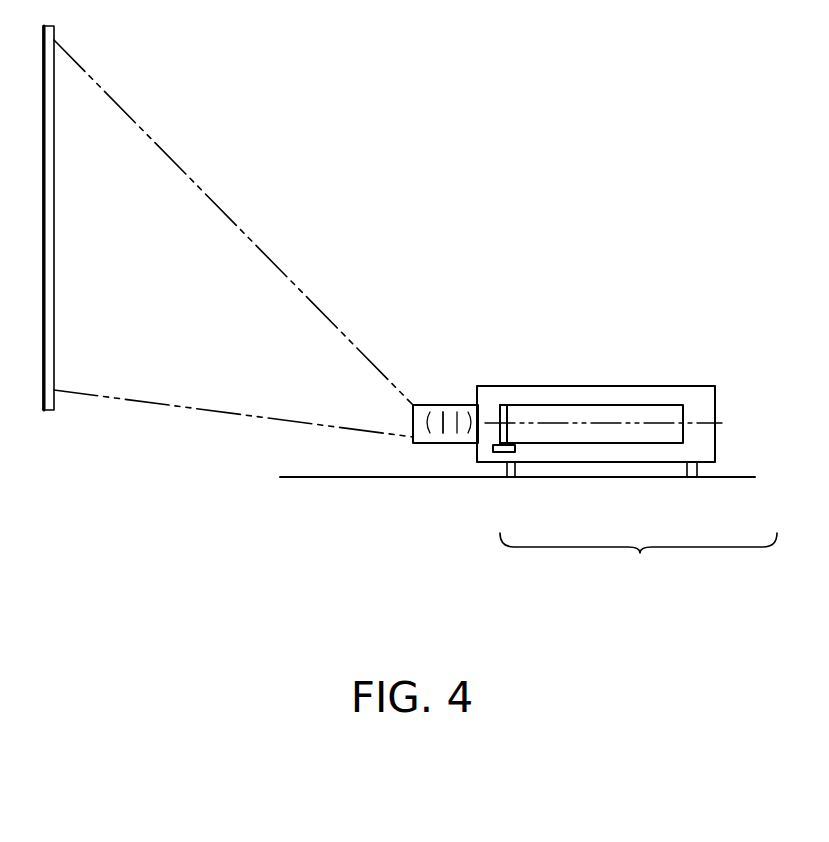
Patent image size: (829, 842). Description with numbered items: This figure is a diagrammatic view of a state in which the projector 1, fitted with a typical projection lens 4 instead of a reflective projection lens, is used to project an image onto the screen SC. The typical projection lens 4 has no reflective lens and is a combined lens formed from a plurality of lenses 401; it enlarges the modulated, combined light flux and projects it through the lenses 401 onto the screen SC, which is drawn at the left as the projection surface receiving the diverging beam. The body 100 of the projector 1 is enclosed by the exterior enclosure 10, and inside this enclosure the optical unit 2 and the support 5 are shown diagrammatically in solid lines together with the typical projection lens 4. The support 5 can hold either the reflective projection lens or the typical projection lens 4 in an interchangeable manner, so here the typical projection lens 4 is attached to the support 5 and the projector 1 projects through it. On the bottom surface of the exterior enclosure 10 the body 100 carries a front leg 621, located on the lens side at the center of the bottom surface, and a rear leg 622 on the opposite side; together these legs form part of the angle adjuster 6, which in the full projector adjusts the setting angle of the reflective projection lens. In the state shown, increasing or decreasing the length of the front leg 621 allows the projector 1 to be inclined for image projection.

The screen SC is at (55, 137).
The projector 1 is at (647, 297).
The typical projection lens 4 is at (430, 405).
The lenses 401 is at (431, 443).
The exterior enclosure 10 is at (661, 386).
The body 100 is at (611, 386).
The optical unit 2 is at (553, 386).
The support 5 is at (507, 386).
The front leg 621 is at (518, 468).
The rear leg 622 is at (699, 468).
The angle adjuster 6 is at (638, 560).